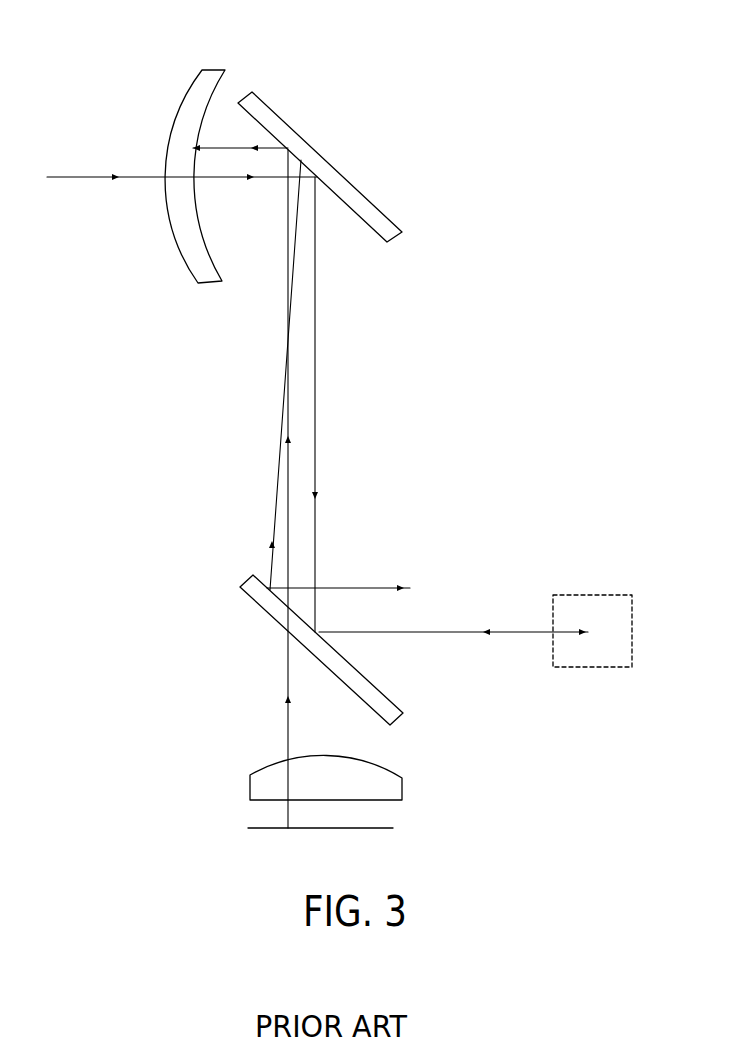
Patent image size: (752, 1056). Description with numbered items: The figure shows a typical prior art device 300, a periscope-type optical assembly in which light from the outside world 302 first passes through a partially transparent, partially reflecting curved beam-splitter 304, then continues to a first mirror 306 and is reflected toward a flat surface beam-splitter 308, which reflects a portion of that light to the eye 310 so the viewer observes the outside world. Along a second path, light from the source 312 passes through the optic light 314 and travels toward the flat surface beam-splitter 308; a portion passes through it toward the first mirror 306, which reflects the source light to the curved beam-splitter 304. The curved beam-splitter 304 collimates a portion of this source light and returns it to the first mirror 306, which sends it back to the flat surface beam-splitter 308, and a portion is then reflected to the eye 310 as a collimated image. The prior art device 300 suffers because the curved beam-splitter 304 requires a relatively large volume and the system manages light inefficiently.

The prior art device 300 is at (446, 438).
The outside world 302 is at (74, 158).
The curved beam-splitter 304 is at (209, 66).
The first mirror 306 is at (367, 196).
The flat surface beam-splitter 308 is at (257, 608).
The eye 310 is at (598, 600).
The source 312 is at (393, 828).
The optic light 314 is at (249, 794).